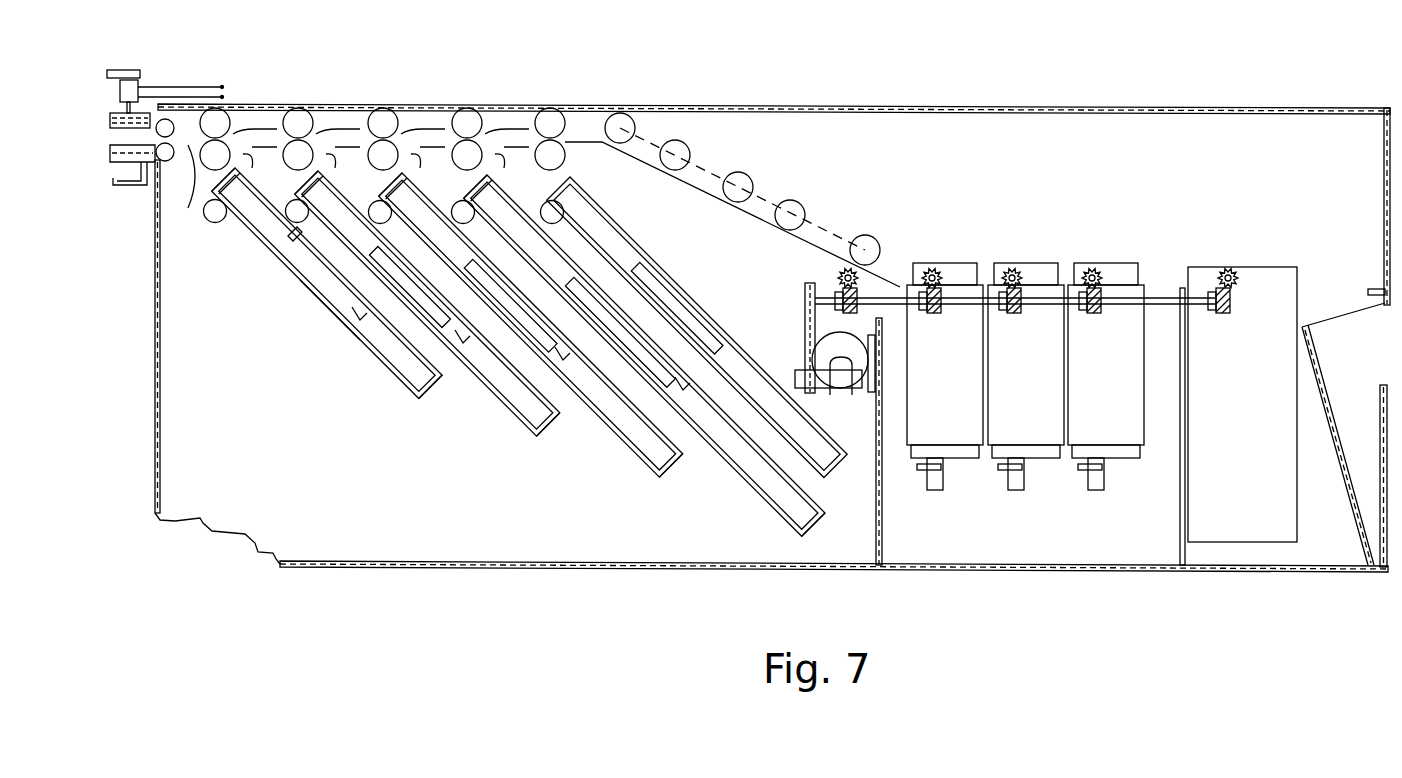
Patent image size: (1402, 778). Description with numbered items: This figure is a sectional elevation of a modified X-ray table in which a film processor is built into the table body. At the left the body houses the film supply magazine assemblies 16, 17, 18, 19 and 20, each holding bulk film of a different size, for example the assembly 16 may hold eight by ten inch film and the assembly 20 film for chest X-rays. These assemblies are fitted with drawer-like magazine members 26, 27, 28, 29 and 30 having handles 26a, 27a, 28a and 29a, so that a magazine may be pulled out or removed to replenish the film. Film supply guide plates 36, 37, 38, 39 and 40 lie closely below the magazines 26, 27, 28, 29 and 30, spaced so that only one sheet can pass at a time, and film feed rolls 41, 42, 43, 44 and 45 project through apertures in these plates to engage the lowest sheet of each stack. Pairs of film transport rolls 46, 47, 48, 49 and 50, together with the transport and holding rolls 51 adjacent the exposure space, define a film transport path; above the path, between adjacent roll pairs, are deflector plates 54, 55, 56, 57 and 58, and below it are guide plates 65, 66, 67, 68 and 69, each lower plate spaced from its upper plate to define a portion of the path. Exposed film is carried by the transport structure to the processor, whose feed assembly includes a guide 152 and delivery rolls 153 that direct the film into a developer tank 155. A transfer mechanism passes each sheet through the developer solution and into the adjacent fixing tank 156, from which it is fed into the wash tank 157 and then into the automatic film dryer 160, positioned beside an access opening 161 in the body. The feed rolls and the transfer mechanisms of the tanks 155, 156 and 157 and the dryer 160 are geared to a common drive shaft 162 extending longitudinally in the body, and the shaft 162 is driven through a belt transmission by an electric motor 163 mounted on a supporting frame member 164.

The deflector plate 54 is at (188, 133).
The film transport and holding rolls 51 is at (170, 163).
The guide plate 65 is at (184, 191).
The film transport rolls 46 is at (225, 122).
The deflector plate 55 is at (262, 135).
The film transport rolls 47 is at (307, 117).
The film transport rolls 48 is at (390, 117).
The film transport rolls 49 is at (470, 117).
The film transport rolls 50 is at (548, 117).
The deflector plate 56 is at (349, 116).
The deflector plate 57 is at (425, 116).
The deflector plate 58 is at (509, 116).
The guide 152 is at (590, 142).
The delivery rolls 153 is at (643, 128).
The magazine member 26 is at (400, 360).
The magazine member 27 is at (525, 405).
The magazine member 28 is at (642, 440).
The magazine member 29 is at (770, 490).
The magazine member 30 is at (813, 438).
The handle 26a is at (360, 325).
The handle 27a is at (463, 343).
The handle 28a is at (563, 360).
The handle 29a is at (683, 393).
The film supply guide plate 36 is at (332, 313).
The film supply guide plate 37 is at (390, 285).
The film supply guide plate 38 is at (487, 300).
The film supply guide plate 39 is at (550, 285).
The film supply guide plate 40 is at (605, 248).
The film feed roll 41 is at (215, 225).
The film feed roll 42 is at (297, 222).
The film feed roll 43 is at (385, 222).
The film feed roll 44 is at (466, 224).
The film feed roll 45 is at (555, 224).
The lower guide plate 66 is at (240, 179).
The lower guide plate 67 is at (323, 180).
The lower guide plate 68 is at (406, 181).
The lower guide plate 69 is at (491, 182).
The film supply magazine assembly 16 is at (440, 392).
The film supply magazine assembly 17 is at (558, 430).
The film supply magazine assembly 18 is at (690, 475).
The film supply magazine assembly 19 is at (822, 525).
The film supply magazine assembly 20 is at (865, 488).
The supporting frame member 164 is at (882, 530).
The drive shaft 162 is at (1128, 308).
The electric motor 163 is at (830, 348).
The developer tank 155 is at (932, 256).
The fixing tank 156 is at (1012, 256).
The wash tank 157 is at (1090, 256).
The automatic film dryer 160 is at (1207, 258).
The access opening 161 is at (1345, 322).